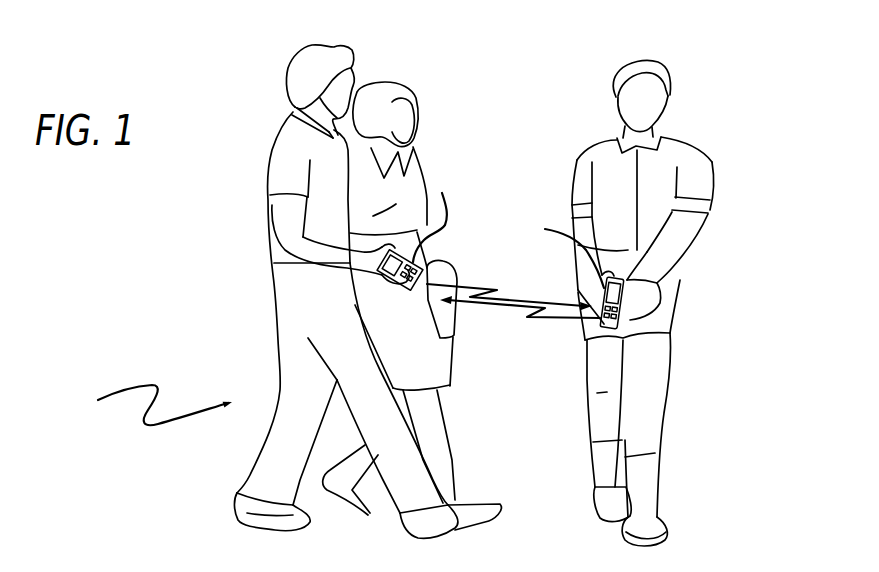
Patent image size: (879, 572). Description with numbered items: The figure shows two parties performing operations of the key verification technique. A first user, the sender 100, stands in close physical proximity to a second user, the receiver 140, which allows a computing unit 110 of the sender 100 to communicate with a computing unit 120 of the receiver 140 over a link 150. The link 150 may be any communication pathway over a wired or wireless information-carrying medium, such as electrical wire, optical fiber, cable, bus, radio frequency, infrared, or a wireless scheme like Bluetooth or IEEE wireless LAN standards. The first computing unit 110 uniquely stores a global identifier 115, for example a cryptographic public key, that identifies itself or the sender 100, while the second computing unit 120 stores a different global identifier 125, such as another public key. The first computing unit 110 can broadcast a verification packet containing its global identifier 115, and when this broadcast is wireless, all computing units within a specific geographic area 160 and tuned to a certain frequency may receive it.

The first user (sender) 100 is at (235, 133).
The first computing unit 110 is at (405, 283).
The global identifier 115 is at (437, 214).
The second computing unit 120 is at (557, 253).
The global identifier 125 is at (625, 320).
The second user (receiver) 140 is at (741, 139).
The link 150 is at (545, 288).
The geographic area 160 is at (147, 405).